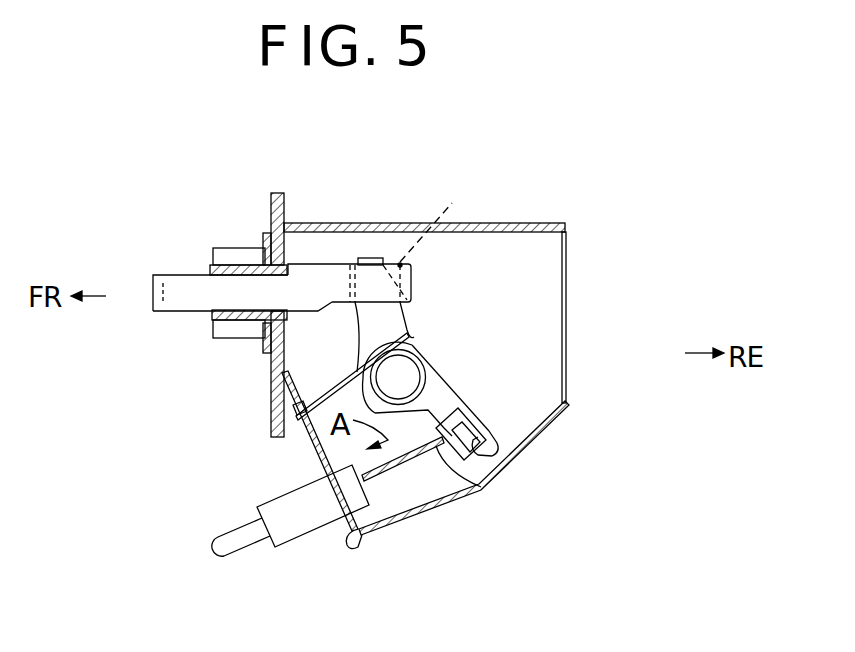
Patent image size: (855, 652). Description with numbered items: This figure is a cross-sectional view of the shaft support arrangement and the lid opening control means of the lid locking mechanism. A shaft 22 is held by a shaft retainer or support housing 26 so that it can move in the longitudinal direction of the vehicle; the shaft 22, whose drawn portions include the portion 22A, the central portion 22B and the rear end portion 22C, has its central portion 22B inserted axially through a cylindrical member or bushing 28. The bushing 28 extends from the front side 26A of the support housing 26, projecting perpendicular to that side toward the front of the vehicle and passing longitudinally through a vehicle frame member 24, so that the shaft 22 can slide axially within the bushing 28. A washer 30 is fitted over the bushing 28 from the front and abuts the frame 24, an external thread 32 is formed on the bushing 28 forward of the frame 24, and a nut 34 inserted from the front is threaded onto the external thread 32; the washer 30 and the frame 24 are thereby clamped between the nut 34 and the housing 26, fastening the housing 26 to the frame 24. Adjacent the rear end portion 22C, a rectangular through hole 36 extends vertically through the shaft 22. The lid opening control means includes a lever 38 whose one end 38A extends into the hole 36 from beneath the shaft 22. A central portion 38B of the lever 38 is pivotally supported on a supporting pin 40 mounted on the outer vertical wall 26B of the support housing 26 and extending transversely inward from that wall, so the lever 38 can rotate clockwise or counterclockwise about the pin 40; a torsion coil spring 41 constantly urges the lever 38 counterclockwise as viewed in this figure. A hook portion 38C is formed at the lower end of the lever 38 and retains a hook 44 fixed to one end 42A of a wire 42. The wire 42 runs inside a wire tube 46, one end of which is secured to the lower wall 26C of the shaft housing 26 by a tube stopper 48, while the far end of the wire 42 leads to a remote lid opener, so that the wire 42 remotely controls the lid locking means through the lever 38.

The shaft 22 is at (329, 254).
The arm front portion 22A is at (190, 290).
The central portion 22B is at (240, 300).
The rear end portion 22C is at (402, 266).
The vehicle frame member 24 is at (277, 192).
The support housing 26 is at (528, 218).
The front side of support housing 26A is at (268, 362).
The outer vertical wall 26B is at (497, 403).
The lower wall 26C is at (354, 545).
The cylindrical bushing 28 is at (266, 262).
The washer 30 is at (266, 235).
The external thread 32 is at (214, 326).
The nut 34 is at (213, 255).
The rectangular through hole 36 is at (445, 223).
The lever 38 is at (424, 334).
The lever end 38A is at (372, 257).
The central portion of lever 38B is at (445, 375).
The hook portion 38C is at (482, 414).
The supporting pin 40 is at (385, 378).
The torsion coil spring 41 is at (297, 440).
The wire 42 is at (410, 484).
The end of wire 42A is at (483, 490).
The hook 44 is at (504, 460).
The wire tube 46 is at (234, 553).
The tube stopper 48 is at (297, 526).